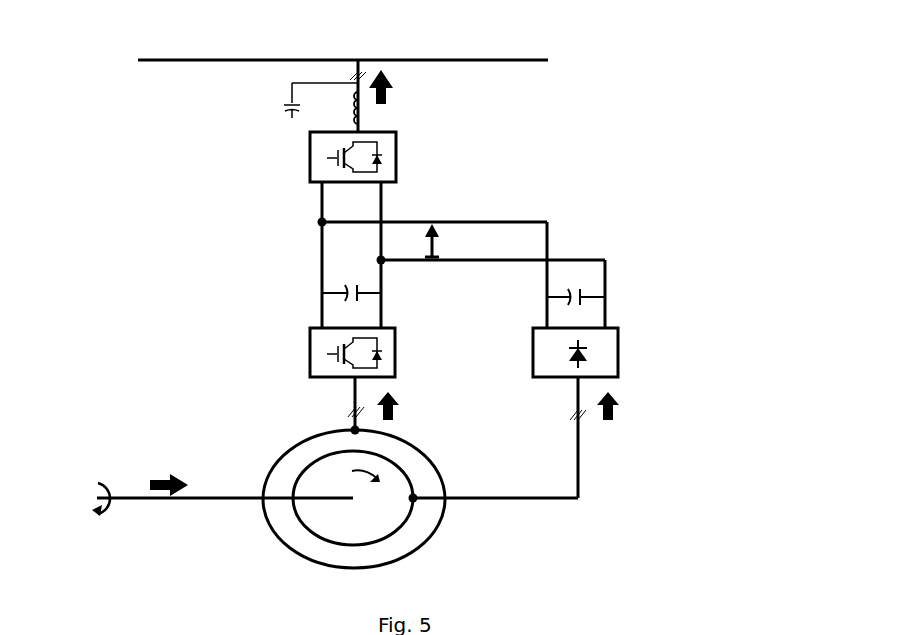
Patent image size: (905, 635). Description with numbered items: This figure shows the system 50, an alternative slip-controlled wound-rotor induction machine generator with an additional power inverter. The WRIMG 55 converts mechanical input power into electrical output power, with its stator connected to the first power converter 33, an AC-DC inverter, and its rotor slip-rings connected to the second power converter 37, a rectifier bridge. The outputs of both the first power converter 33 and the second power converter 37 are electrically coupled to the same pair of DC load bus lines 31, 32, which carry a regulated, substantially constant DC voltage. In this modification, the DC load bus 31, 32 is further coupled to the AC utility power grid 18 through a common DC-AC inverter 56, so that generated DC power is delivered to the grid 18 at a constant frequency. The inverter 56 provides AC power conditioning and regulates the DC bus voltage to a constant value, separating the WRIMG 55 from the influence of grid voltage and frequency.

The AC utility power grid 18 is at (522, 59).
The DC load bus line 31 is at (520, 220).
The DC load bus line 32 is at (595, 258).
The first power converter 33 is at (310, 343).
The second power converter 37 is at (620, 338).
The system 50 is at (124, 230).
The WRIMG 55 is at (240, 565).
The common DC-AC inverter 56 is at (396, 157).